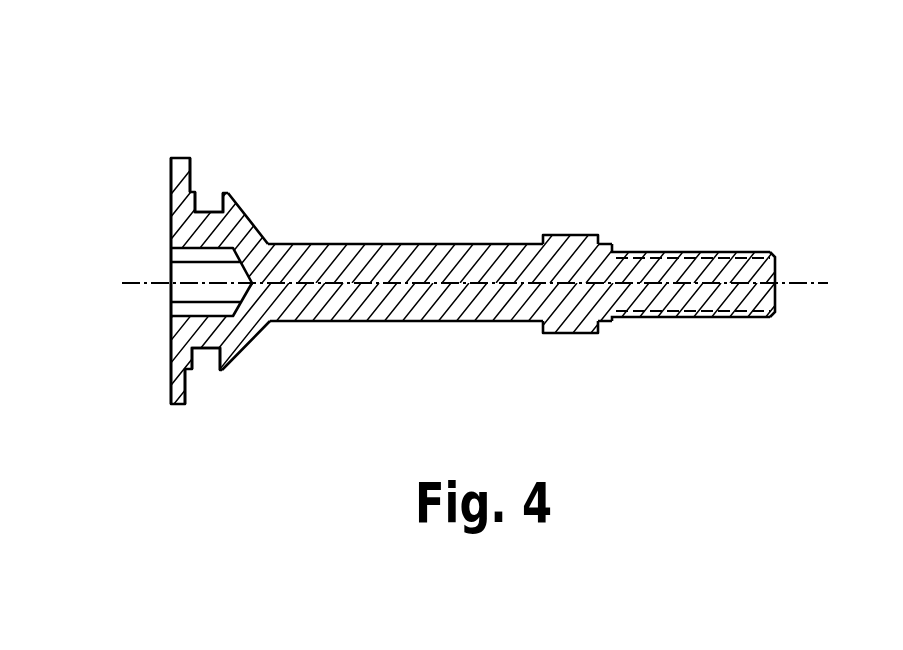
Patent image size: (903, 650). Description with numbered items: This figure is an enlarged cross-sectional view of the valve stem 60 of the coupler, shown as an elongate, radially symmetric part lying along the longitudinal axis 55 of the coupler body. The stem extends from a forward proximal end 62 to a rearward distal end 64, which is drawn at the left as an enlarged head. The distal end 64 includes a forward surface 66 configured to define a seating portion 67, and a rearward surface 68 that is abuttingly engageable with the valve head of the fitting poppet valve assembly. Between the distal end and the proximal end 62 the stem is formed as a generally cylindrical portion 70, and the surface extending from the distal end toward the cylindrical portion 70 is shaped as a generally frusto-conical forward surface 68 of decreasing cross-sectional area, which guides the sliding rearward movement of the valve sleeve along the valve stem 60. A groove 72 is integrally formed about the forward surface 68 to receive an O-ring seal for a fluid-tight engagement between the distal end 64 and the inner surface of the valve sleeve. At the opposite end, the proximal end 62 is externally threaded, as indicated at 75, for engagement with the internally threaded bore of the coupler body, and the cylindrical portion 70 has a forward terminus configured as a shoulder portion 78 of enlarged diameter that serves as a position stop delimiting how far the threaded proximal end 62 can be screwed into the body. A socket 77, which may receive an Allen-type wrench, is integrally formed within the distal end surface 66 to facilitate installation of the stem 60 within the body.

The valve stem 60 is at (482, 154).
The distal end 64 is at (175, 157).
The forward surface 66 is at (168, 213).
The seating portion 67 is at (191, 173).
The groove 72 is at (208, 206).
The rearward surface 68 is at (255, 214).
The cylindrical portion 70 is at (440, 244).
The shoulder portion 78 is at (598, 240).
The external threads 75 is at (681, 251).
The proximal end 62 is at (777, 268).
The longitudinal axis 55 is at (802, 288).
The socket 77 is at (170, 290).